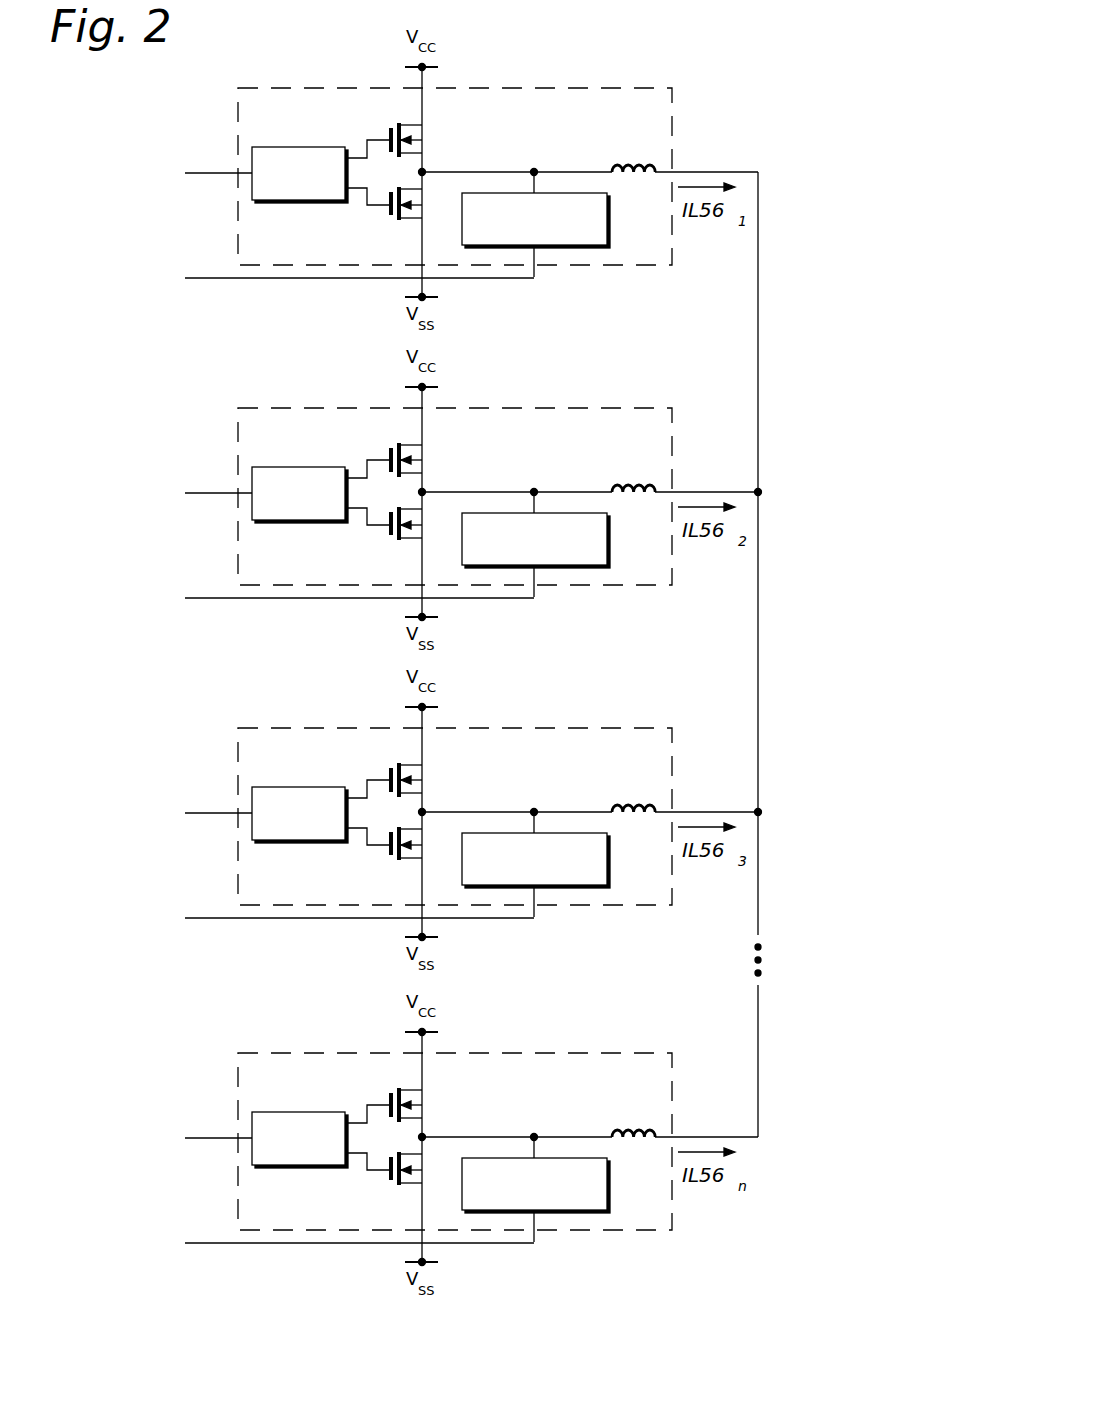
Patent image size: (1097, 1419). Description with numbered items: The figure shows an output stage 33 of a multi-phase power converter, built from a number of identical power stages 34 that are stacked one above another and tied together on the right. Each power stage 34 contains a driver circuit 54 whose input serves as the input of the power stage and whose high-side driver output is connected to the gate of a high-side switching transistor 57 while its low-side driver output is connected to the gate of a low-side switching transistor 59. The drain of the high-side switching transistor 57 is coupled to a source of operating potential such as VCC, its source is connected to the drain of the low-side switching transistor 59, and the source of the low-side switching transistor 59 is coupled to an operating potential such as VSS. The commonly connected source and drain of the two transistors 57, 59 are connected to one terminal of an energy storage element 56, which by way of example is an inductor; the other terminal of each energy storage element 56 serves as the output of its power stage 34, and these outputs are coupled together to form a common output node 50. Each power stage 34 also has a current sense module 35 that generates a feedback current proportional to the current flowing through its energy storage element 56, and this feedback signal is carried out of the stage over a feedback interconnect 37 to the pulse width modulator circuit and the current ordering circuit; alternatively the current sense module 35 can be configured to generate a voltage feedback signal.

The output stage 33 is at (128, 126).
The power stage 34 is at (570, 88).
The current sense module 35 is at (607, 217).
The feedback interconnect 37 is at (275, 278).
The output node 50 is at (758, 652).
The driver circuit 54 is at (290, 147).
The energy storage element 56 is at (612, 161).
The high-side switching transistor 57 is at (390, 127).
The low-side switching transistor 59 is at (397, 228).